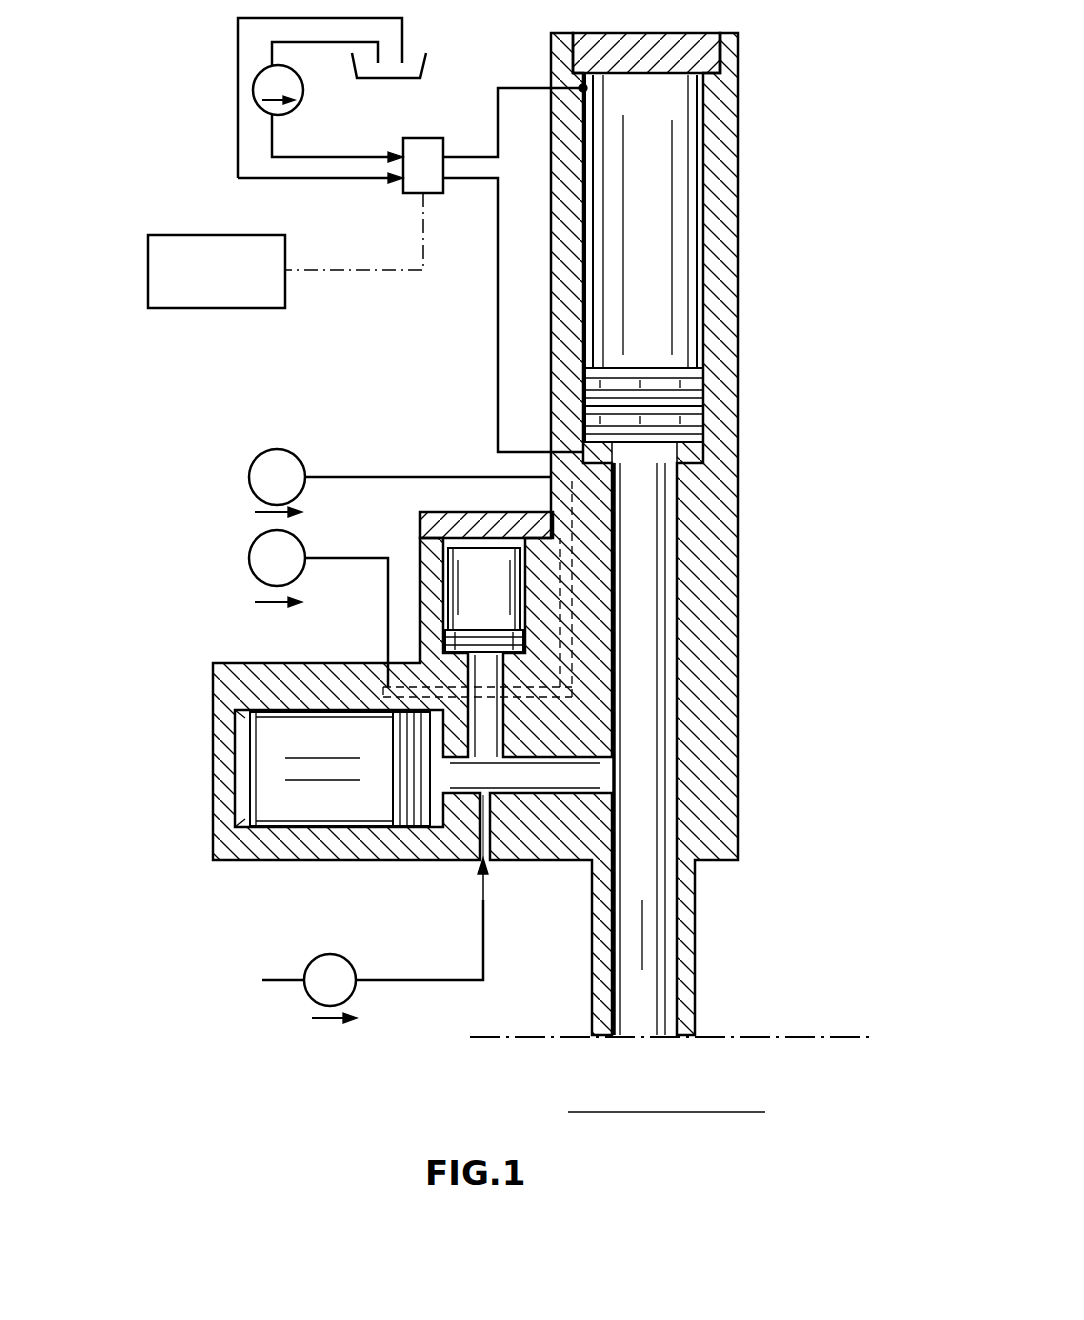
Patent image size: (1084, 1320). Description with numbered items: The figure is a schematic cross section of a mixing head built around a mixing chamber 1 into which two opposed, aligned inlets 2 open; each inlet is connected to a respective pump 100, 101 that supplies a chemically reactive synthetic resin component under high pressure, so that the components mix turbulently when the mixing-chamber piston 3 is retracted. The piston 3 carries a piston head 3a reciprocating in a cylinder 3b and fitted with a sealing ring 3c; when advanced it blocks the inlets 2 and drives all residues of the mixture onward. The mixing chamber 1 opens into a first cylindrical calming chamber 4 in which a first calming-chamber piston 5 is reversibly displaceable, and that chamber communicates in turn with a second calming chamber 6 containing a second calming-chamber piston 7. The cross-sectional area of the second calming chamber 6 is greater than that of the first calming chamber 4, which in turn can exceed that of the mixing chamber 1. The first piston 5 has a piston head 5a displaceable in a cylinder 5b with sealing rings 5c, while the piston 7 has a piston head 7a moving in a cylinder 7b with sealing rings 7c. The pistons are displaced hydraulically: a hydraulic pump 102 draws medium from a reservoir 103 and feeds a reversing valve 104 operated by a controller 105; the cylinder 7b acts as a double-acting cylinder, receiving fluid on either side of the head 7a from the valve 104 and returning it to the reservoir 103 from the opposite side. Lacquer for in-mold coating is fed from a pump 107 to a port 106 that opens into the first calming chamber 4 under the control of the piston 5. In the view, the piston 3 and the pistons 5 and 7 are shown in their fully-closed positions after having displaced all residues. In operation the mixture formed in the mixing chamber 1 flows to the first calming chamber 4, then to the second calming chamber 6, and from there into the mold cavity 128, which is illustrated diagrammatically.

The mixing chamber 1 is at (495, 738).
The inlets 2 is at (380, 688).
The mixing-chamber piston 3 is at (590, 733).
The piston head 3a is at (455, 585).
The cylinder 3b is at (485, 560).
The sealing ring 3c is at (440, 635).
The first calming chamber 4 is at (543, 800).
The first calming-chamber piston 5 is at (600, 772).
The piston head 5a is at (392, 798).
The cylinder 5b is at (275, 822).
The sealing rings 5c is at (418, 828).
The second calming chamber 6 is at (665, 522).
The second calming-chamber piston 7 is at (655, 598).
The piston head 7a is at (700, 418).
The cylinder 7b is at (690, 268).
The sealing rings 7c is at (703, 393).
The pump 100 is at (249, 477).
The pump 101 is at (249, 558).
The hydraulic pump 102 is at (300, 88).
The reservoir 103 is at (425, 65).
The reversing valve 104 is at (430, 146).
The controller 105 is at (209, 298).
The port 106 is at (496, 860).
The pump 107 is at (308, 966).
The mold cavity 128 is at (668, 1083).